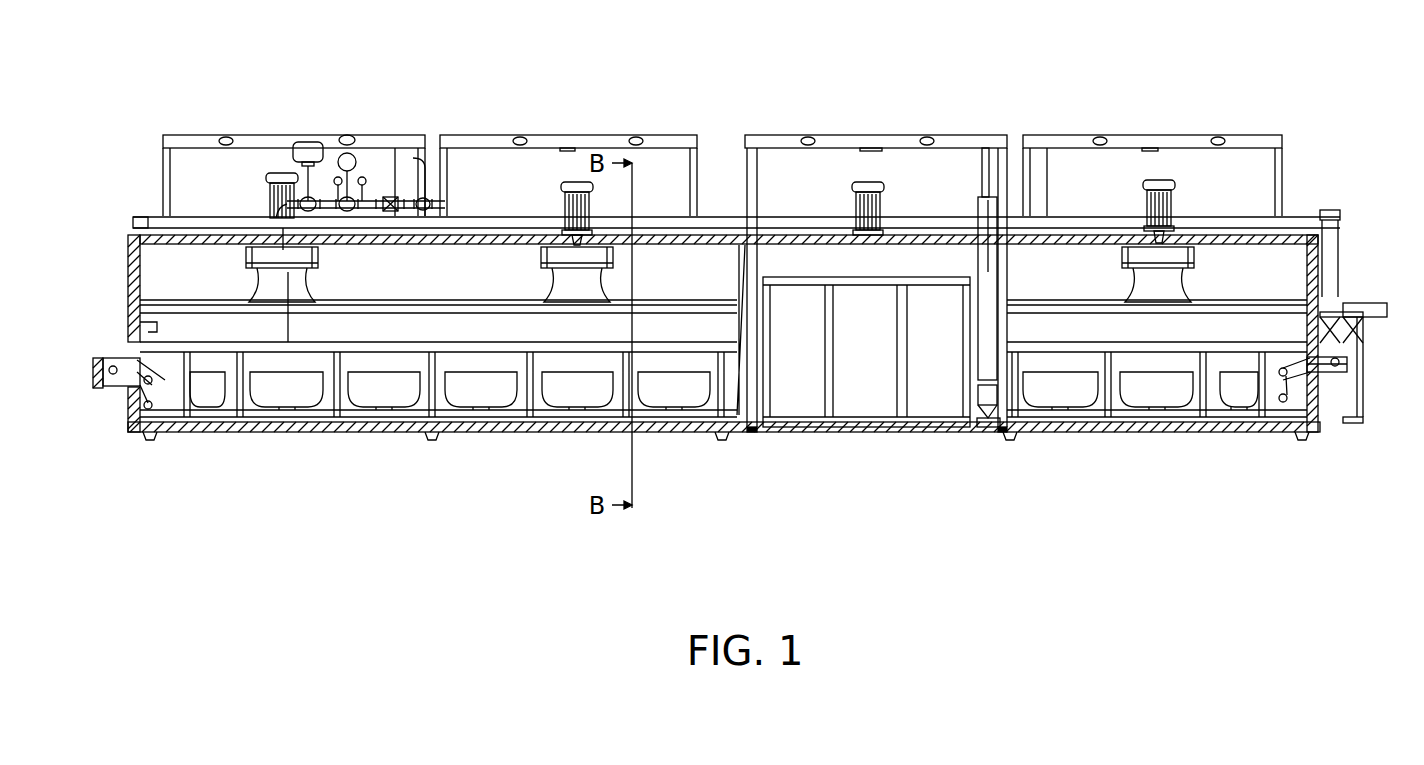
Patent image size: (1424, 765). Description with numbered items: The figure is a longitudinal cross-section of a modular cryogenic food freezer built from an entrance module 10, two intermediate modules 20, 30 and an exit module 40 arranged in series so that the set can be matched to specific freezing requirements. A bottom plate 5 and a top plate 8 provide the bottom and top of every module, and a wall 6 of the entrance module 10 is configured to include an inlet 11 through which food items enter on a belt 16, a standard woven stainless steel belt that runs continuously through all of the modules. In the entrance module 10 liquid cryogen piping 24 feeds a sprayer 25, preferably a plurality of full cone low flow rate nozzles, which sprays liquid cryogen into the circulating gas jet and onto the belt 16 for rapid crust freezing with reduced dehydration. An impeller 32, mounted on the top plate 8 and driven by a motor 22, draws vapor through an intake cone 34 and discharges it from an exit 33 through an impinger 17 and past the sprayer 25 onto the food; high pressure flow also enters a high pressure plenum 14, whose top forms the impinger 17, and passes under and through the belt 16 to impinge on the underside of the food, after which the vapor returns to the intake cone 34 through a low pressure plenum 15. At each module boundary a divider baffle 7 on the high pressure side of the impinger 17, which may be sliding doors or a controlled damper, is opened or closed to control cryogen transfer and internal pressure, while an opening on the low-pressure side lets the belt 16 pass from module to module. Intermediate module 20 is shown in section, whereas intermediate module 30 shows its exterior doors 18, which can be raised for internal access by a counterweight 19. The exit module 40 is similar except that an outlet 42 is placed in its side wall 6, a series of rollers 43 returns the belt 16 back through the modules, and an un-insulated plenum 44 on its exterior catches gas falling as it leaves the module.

The bottom plate 5 is at (152, 440).
The wall 6 is at (128, 297).
The divider baffle 7 is at (436, 273).
The top plate 8 is at (152, 238).
The entrance module 10 is at (292, 450).
The inlet 11 is at (97, 387).
The high pressure plenum 14 is at (199, 401).
The low pressure plenum 15 is at (228, 405).
The belt 16 is at (128, 360).
The impinger 17 is at (200, 372).
The exterior doors 18 is at (797, 400).
The counterweight 19 is at (1000, 195).
The intermediate module 20 is at (515, 447).
The motor 22 is at (275, 175).
The liquid cryogen piping 24 is at (338, 177).
The sprayer 25 is at (238, 345).
The intermediate module 30 is at (892, 303).
The impeller 32 is at (322, 258).
The exit 33 is at (262, 250).
The intake cone 34 is at (305, 294).
The exit module 40 is at (1250, 452).
The outlet 42 is at (1348, 358).
The rollers 43 is at (110, 370).
The un-insulated plenum 44 is at (1360, 420).